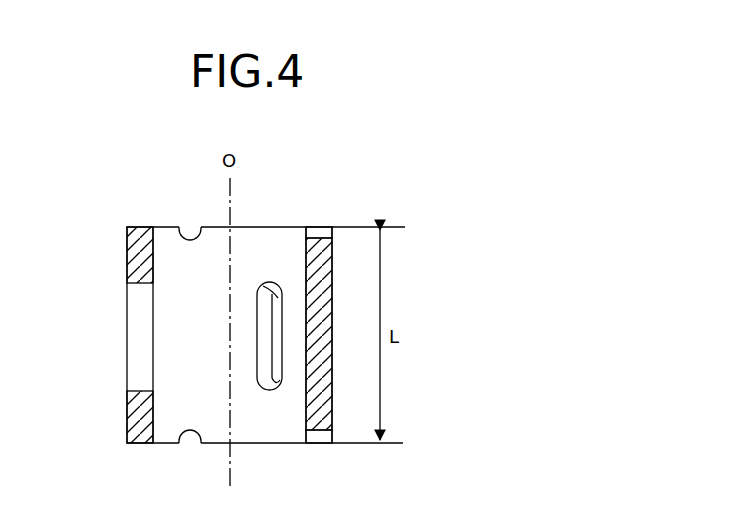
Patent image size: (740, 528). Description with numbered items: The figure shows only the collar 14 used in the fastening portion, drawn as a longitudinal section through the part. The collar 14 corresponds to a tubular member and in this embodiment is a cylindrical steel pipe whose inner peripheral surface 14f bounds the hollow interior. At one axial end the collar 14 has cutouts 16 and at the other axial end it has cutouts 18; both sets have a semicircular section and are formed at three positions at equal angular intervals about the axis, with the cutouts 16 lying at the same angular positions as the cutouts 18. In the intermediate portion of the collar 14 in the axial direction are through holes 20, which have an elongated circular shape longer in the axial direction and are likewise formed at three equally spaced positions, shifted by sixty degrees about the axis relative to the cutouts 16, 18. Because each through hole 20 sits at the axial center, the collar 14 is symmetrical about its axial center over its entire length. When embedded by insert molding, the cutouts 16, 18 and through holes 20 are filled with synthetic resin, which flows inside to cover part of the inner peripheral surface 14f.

The collar 14 is at (319, 166).
The inner peripheral surface 14f is at (278, 420).
The cutouts 16 is at (197, 228).
The cutouts 18 is at (196, 446).
The through holes 20 is at (272, 290).